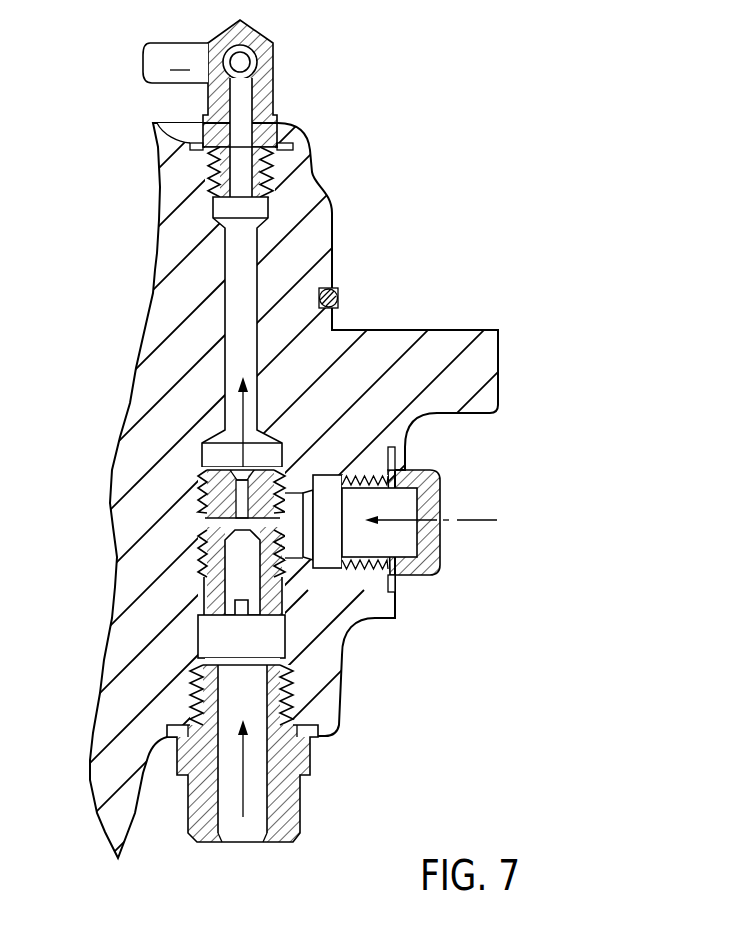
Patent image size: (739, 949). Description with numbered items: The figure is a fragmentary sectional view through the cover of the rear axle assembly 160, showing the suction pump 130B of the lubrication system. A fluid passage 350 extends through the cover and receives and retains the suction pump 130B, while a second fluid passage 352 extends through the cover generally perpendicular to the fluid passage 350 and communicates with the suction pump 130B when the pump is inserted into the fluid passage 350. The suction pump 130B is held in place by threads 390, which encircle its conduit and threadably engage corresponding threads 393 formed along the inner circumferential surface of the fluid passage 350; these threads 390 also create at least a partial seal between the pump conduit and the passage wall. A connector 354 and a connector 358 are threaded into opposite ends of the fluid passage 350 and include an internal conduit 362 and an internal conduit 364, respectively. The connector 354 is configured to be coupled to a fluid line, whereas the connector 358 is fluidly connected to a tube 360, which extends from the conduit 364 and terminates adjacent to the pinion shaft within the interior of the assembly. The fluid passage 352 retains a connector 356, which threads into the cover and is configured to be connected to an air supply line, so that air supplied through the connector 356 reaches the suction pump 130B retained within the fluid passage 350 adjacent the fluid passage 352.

The housing 160 is at (477, 240).
The connector 358 is at (275, 75).
The tube 360 is at (180, 43).
The internal conduit 364 is at (222, 133).
The fluid passage 350 is at (262, 325).
The fluid passage 352 is at (328, 474).
The connector 356 is at (417, 578).
The threads 390 is at (203, 477).
The threads 393 is at (202, 552).
The suction pump 130B is at (272, 598).
The connector 354 is at (300, 808).
The internal conduit 362 is at (267, 806).